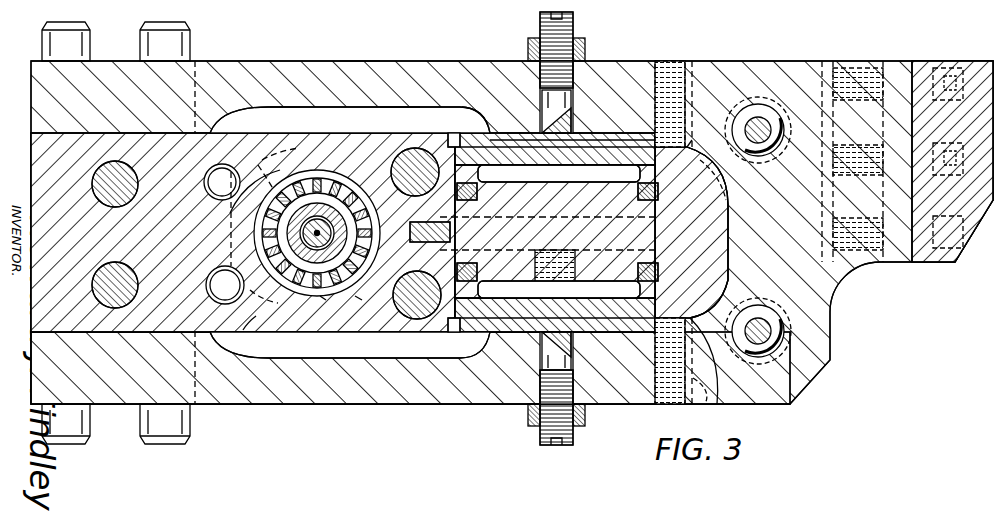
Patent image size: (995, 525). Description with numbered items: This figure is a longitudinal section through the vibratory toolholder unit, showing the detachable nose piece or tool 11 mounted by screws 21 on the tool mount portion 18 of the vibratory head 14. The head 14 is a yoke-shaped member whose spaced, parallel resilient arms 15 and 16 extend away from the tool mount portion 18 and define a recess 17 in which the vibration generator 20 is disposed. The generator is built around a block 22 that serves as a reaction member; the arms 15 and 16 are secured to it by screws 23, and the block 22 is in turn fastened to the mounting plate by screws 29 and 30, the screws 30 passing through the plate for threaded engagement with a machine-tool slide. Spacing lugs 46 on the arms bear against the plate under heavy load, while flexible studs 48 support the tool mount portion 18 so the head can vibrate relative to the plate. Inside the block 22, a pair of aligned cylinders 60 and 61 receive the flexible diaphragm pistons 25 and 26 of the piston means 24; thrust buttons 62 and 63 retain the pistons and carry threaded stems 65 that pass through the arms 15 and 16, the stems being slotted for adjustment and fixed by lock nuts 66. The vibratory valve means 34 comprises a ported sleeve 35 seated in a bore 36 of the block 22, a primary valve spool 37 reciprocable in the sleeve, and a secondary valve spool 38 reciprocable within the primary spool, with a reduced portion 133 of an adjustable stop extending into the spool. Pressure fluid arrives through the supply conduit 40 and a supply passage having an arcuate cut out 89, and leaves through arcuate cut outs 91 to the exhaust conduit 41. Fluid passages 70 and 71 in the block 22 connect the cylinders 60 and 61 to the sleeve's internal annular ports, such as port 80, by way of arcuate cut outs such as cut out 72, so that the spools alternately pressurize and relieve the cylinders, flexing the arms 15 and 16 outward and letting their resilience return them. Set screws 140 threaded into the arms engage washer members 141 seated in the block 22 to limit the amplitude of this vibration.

The nose piece or tool 11 is at (990, 63).
The vibratory head 14 is at (690, 70).
The resilient arm 15 is at (352, 405).
The resilient arm 16 is at (362, 64).
The recess 17 is at (290, 107).
The tool mount portion 18 is at (890, 62).
The vibration generator 20 is at (396, 106).
The screws 21 is at (855, 62).
The block 22 is at (173, 137).
The screws 23 is at (152, 22).
The piston means 24 is at (466, 128).
The flexible diaphragm piston 25 is at (478, 360).
The flexible diaphragm piston 26 is at (578, 155).
The screws 29 is at (96, 175).
The screws 30 is at (455, 108).
The vibratory valve means 34 is at (226, 226).
The ported sleeve 35 is at (330, 233).
The bore 36 is at (222, 182).
The primary valve spool 37 is at (318, 216).
The secondary valve spool 38 is at (340, 196).
The supply conduit 40 is at (214, 146).
The exhaust conduit 41 is at (207, 285).
The spacing lug 46 is at (688, 140).
The flexible stud 48 is at (772, 122).
The cylinder 60 is at (608, 283).
The cylinder 61 is at (494, 178).
The thrust button 62 is at (450, 336).
The thrust button 63 is at (665, 100).
The threaded stem 65 is at (574, 28).
The lock nut 66 is at (530, 50).
The fluid passage 70 is at (437, 217).
The fluid passage 71 is at (603, 165).
The arcuate cut out 72 is at (360, 298).
The internal annular port 80 is at (423, 120).
The arcuate cut out 89 is at (273, 160).
The arcuate cut outs 91 is at (246, 333).
The reduced portion 133 is at (322, 298).
The set screws 140 is at (702, 150).
The washer members 141 is at (722, 168).